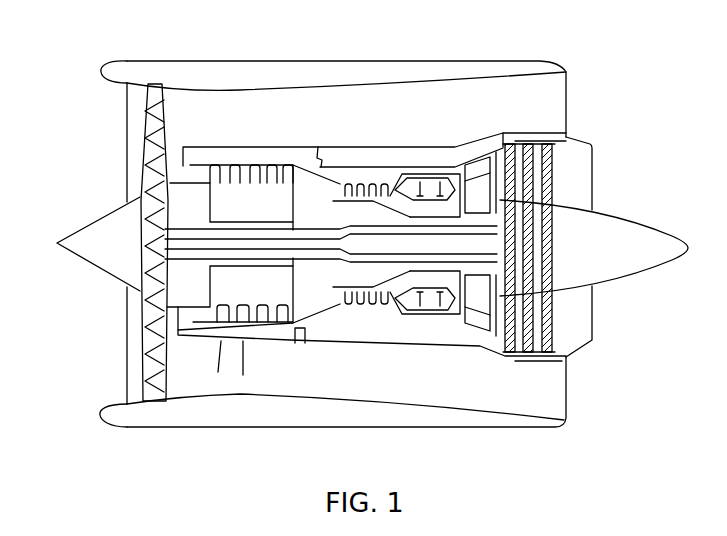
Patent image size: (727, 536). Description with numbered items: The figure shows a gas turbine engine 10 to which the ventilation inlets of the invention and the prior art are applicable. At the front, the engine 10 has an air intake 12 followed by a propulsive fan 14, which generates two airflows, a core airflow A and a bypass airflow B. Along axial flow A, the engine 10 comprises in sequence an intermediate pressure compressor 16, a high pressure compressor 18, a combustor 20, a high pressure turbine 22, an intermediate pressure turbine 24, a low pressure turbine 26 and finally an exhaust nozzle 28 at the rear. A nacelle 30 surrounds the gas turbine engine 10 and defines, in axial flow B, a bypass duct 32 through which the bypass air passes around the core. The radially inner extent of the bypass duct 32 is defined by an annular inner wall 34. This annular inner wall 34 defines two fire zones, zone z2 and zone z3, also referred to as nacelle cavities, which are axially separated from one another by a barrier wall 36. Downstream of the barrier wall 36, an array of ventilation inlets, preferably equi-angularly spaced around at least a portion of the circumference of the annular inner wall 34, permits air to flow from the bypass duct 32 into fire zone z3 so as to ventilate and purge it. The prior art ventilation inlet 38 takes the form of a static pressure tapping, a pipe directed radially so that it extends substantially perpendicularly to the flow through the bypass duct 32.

The gas turbine engine 10 is at (88, 56).
The air intake 12 is at (132, 113).
The propulsive fan 14 is at (150, 86).
The intermediate pressure compressor 16 is at (253, 196).
The high pressure compressor 18 is at (352, 184).
The combustor 20 is at (428, 168).
The high pressure turbine 22 is at (466, 160).
The intermediate pressure turbine 24 is at (500, 150).
The low pressure turbine 26 is at (558, 157).
The exhaust nozzle 28 is at (575, 165).
The nacelle 30 is at (226, 146).
The bypass duct 32 is at (361, 119).
The annular inner wall 34 is at (420, 348).
The barrier wall 36 is at (293, 344).
The ventilation inlet 38 is at (322, 345).
The fire zone z2 is at (228, 144).
The fire zone z3 is at (318, 148).
The axial flow A is at (176, 162).
The axial flow B is at (176, 122).